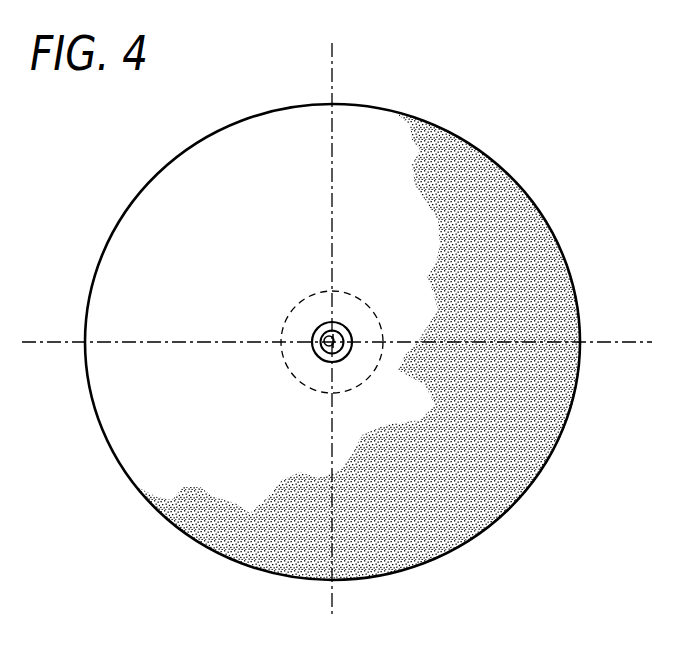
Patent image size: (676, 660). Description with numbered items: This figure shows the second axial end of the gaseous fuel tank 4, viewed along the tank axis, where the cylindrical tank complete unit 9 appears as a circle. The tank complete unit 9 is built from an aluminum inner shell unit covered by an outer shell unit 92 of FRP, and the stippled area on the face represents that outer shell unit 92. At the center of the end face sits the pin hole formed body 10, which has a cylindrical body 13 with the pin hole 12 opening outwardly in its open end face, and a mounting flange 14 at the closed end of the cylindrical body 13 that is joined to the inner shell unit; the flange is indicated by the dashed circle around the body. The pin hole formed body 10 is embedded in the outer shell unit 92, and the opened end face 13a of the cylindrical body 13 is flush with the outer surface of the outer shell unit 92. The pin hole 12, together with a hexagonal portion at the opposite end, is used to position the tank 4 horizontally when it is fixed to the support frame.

The gaseous fuel tank 4 is at (512, 175).
The tank complete unit 9 is at (555, 292).
The outer shell unit 92 is at (545, 433).
The pin hole formed body 10 is at (327, 321).
The pin hole 12 is at (324, 358).
The cylindrical body 13 is at (351, 333).
The opened end face 13a is at (343, 356).
The mounting flange 14 is at (350, 292).